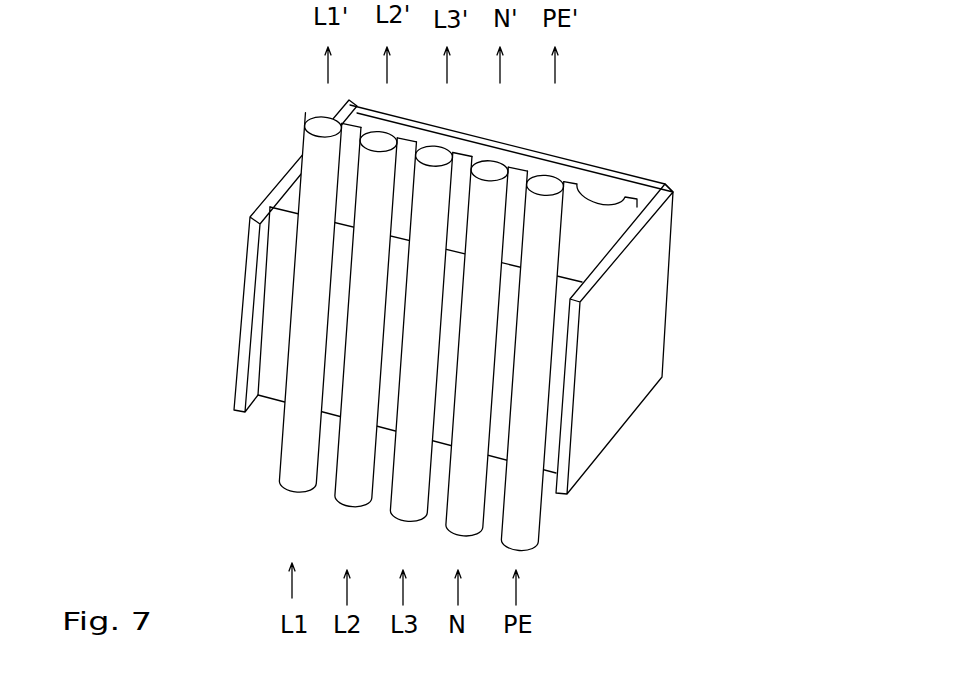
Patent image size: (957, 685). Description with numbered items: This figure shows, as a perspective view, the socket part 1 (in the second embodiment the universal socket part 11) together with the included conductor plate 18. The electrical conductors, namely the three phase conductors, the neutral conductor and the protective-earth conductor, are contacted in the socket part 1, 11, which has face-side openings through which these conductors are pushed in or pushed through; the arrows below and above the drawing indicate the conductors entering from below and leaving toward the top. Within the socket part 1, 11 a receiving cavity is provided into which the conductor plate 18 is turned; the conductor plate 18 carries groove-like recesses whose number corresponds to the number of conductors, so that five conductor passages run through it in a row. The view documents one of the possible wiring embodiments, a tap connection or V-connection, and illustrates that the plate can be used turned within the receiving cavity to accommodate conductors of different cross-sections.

The socket part 1 is at (565, 326).
The universal socket part 11 is at (565, 326).
The conductor plate 18 is at (590, 237).